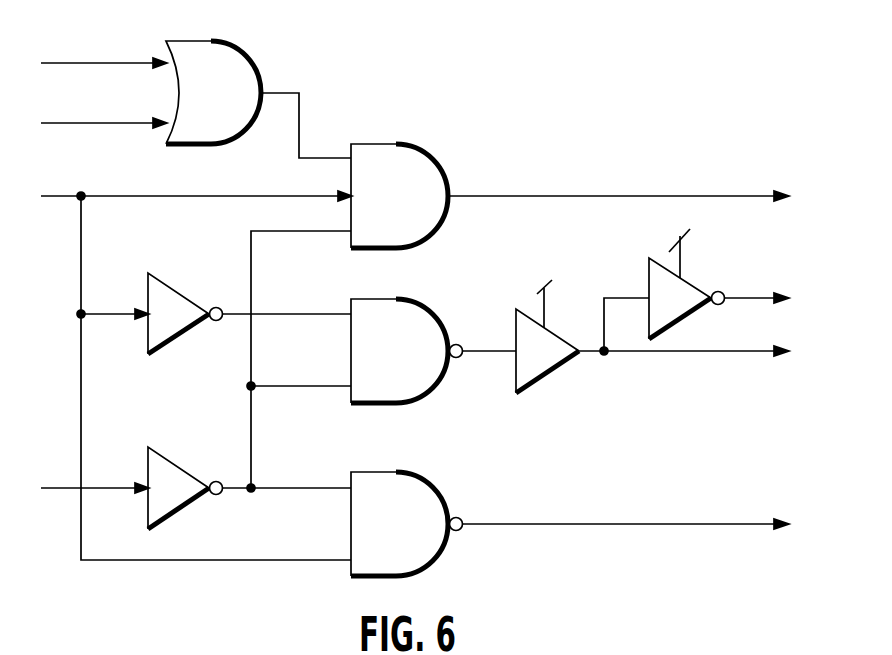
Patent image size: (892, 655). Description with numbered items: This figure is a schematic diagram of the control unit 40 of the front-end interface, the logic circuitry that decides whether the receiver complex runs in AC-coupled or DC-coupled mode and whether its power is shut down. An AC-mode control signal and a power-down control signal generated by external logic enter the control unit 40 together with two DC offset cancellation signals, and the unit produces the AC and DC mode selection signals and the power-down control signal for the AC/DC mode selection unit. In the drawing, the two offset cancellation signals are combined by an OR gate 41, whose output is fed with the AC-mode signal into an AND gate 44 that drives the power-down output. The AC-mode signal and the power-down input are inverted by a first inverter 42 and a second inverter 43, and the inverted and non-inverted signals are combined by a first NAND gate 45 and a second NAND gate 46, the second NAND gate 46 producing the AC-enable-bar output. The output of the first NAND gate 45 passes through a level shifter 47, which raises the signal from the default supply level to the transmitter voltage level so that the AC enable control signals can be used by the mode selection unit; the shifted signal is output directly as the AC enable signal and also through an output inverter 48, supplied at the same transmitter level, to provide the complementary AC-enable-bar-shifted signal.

The control unit 40 is at (414, 292).
The OR gate 41 is at (238, 63).
The inverter 42 is at (180, 305).
The inverter 43 is at (180, 478).
The AND gate 44 is at (420, 160).
The NAND gate 45 is at (420, 313).
The NAND gate 46 is at (420, 487).
The level shifter 47 is at (545, 380).
The inverter 48 is at (693, 292).